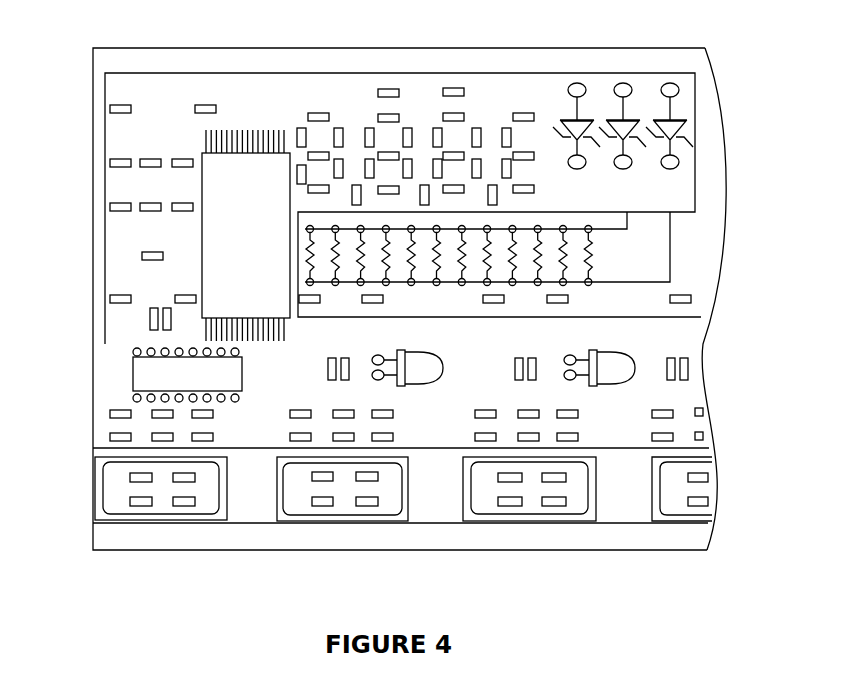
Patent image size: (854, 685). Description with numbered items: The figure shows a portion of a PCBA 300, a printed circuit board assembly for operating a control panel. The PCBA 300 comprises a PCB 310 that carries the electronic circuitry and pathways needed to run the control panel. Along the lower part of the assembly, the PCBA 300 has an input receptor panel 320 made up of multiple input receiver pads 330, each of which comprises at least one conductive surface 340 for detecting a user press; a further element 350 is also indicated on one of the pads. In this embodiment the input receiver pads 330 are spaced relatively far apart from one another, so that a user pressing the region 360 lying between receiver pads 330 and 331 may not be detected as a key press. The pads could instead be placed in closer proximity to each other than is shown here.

The PCBA 300 is at (661, 33).
The PCB 310 is at (107, 163).
The input receptor panel 320 is at (97, 535).
The input receiver pad 330 is at (284, 487).
The input receiver pad 331 is at (578, 497).
The conductive surface 340 is at (345, 504).
The outlet contact slot 350 is at (367, 505).
The region 360 is at (433, 500).